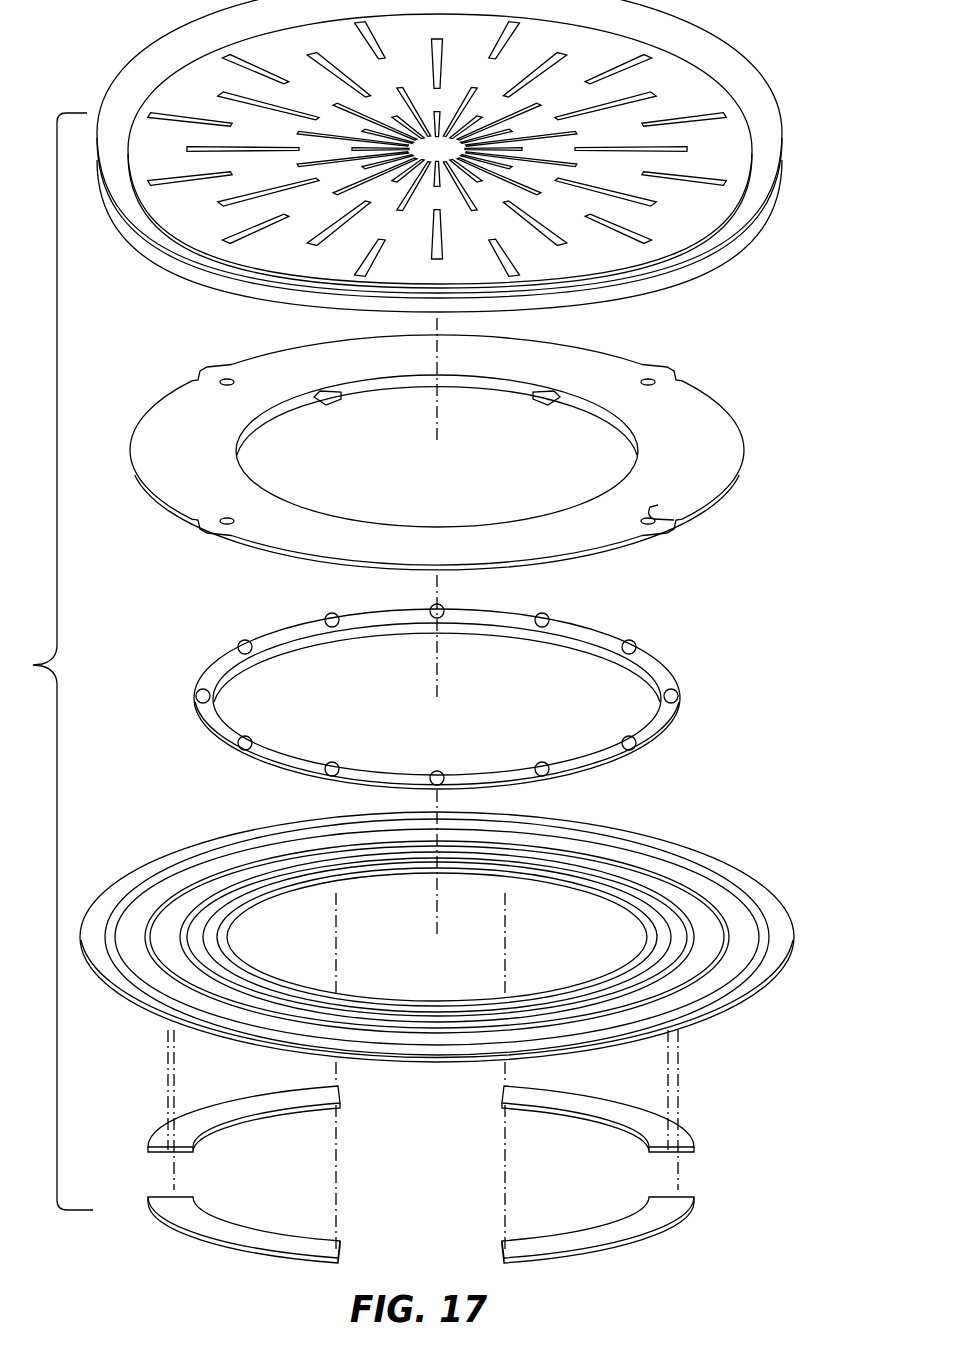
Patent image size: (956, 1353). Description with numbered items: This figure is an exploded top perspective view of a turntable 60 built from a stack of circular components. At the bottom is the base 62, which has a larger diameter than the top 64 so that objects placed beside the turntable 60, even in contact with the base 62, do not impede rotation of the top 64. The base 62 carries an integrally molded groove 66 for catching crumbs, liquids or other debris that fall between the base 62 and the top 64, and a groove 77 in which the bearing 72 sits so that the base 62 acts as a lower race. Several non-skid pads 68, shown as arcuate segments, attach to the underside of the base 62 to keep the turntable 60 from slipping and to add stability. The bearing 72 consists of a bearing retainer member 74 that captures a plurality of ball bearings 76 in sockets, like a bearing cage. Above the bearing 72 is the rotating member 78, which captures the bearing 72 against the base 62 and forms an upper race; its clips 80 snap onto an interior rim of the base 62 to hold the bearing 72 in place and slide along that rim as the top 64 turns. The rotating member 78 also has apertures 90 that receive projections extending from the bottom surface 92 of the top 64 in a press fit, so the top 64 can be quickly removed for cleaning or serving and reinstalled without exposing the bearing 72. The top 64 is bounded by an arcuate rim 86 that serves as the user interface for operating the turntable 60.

The turntable 60 is at (772, 62).
The base 62 is at (728, 1015).
The top 64 is at (677, 266).
The groove 66 is at (163, 943).
The pads 68 is at (269, 1117).
The bearing 72 is at (684, 648).
The bearing retainer member 74 is at (478, 772).
The ball bearings 76 is at (245, 640).
The groove 77 is at (205, 945).
The rotating member 78 is at (716, 357).
The clips 80 is at (327, 403).
The arcuate rim 86 is at (137, 62).
The apertures 90 is at (655, 513).
The bottom surface 92 is at (636, 298).